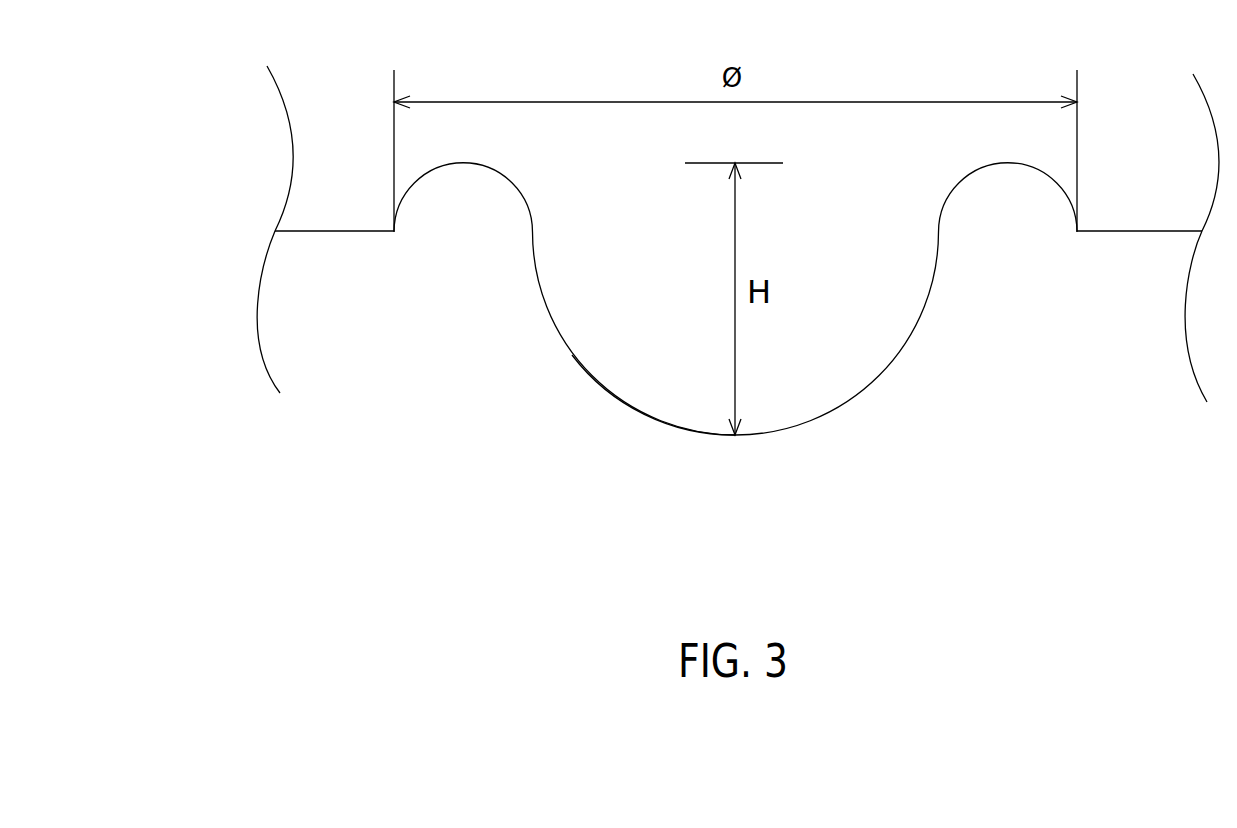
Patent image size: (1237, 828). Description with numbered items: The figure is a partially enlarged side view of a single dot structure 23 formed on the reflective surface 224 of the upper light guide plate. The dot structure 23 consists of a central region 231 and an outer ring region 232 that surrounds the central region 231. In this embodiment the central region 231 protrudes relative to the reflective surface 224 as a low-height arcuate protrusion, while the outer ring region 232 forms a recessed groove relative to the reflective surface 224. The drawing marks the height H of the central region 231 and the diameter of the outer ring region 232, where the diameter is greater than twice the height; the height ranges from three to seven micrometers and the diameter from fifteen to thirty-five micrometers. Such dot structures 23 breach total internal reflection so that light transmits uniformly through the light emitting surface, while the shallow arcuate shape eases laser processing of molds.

The dot structure 23 is at (893, 393).
The central region 231 is at (628, 405).
The outer ring region 232 is at (462, 162).
The reflective surface 224 is at (333, 231).